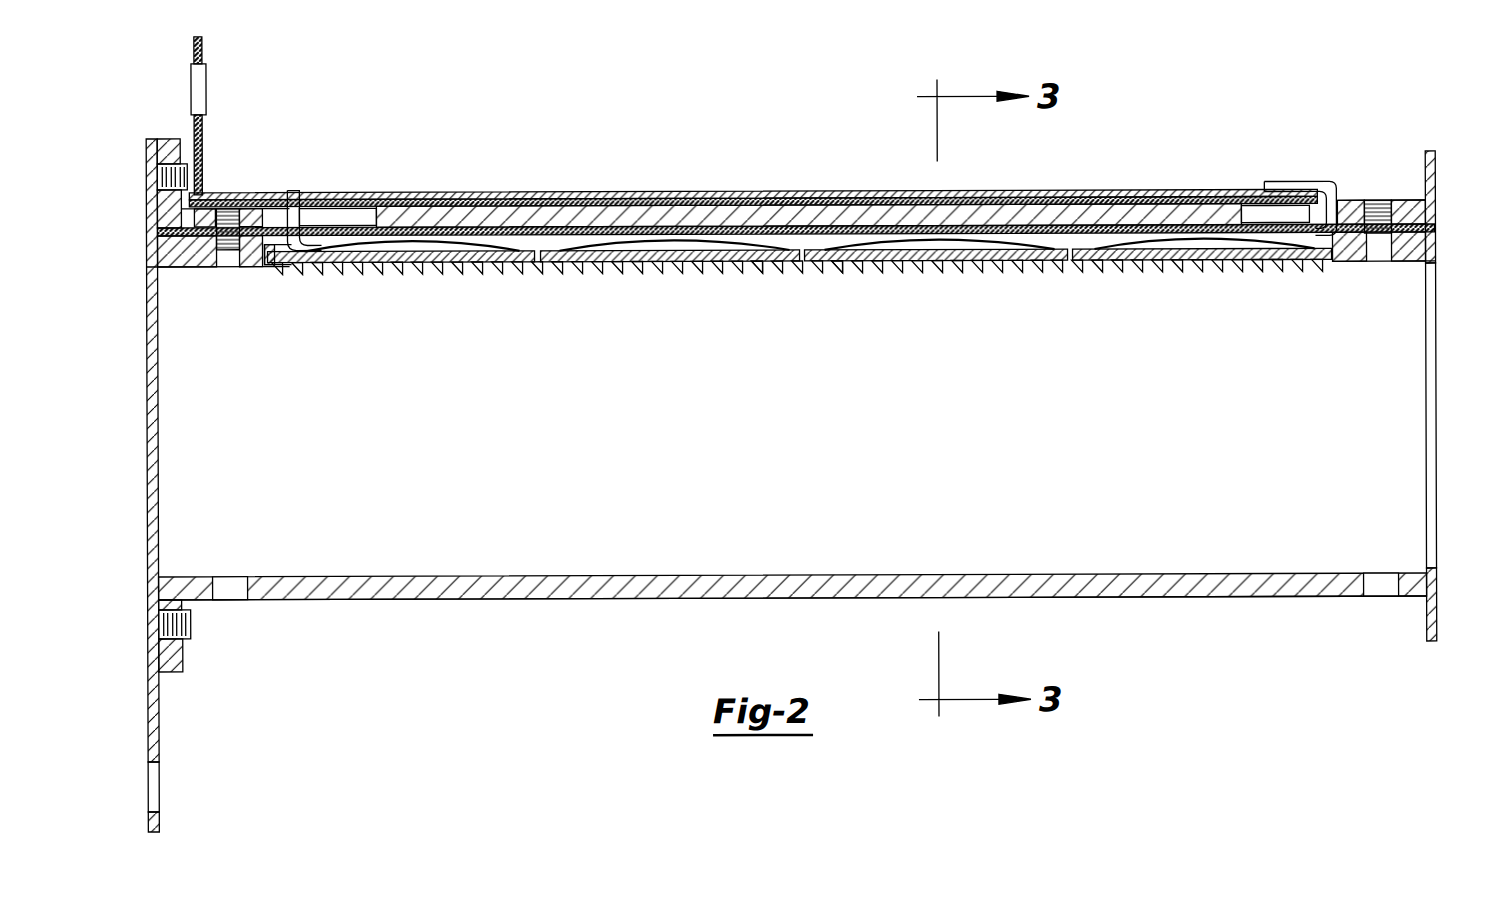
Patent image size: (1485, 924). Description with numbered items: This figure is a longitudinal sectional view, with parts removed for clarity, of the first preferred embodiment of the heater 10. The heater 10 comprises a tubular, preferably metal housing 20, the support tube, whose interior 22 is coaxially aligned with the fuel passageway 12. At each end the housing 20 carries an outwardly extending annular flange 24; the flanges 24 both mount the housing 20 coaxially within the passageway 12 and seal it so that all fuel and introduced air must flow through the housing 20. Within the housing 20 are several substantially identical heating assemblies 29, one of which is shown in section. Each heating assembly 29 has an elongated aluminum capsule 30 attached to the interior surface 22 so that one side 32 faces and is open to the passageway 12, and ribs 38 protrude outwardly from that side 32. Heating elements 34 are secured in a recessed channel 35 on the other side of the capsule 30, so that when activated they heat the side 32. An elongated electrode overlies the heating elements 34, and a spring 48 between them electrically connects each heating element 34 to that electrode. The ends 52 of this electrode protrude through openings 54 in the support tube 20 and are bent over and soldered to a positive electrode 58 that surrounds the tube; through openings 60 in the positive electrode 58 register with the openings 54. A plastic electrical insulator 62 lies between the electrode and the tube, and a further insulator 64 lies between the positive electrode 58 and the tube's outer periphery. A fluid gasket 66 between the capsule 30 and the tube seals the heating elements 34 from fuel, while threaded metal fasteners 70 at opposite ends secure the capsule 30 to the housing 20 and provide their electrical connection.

The heater 10 is at (1157, 150).
The fuel passageway 12 is at (751, 441).
The housing 20 is at (1237, 598).
The interior 22 is at (930, 575).
The annular flange 24 is at (1433, 175).
The heating assembly 29 is at (908, 280).
The capsule 30 is at (1413, 266).
The side 32 is at (1215, 268).
The heating element 34 is at (411, 262).
The recessed channel 35 is at (283, 263).
The rib 38 is at (833, 268).
The spring 48 is at (432, 262).
The end of electrode 52 is at (296, 190).
The opening 54 is at (376, 214).
The positive electrode 58 is at (567, 204).
The through opening 60 is at (287, 195).
The electrical insulator 62 is at (625, 205).
The electrical insulator 64 is at (725, 196).
The fluid gasket 66 is at (1437, 250).
The threaded fastener 70 is at (222, 266).